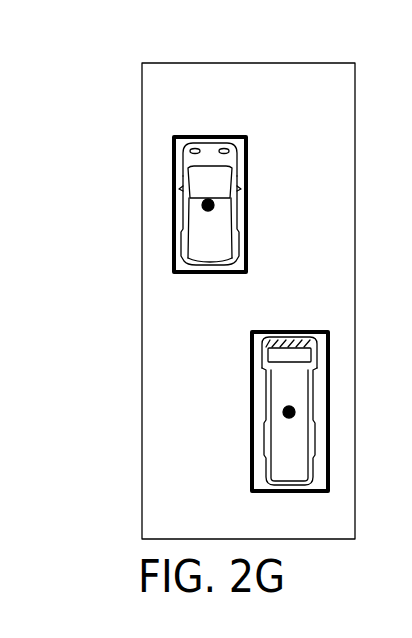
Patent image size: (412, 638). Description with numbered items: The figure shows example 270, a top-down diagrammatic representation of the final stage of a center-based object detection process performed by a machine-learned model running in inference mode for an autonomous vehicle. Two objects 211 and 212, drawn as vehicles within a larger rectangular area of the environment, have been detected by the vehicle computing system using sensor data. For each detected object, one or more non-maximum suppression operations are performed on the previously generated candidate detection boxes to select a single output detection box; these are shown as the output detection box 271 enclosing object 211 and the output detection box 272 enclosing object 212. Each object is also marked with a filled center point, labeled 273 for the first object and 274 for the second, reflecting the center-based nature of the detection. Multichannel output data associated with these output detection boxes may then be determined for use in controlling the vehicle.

The example 270 is at (247, 63).
The object 211 is at (218, 136).
The object 212 is at (293, 331).
The output detection box 271 is at (172, 190).
The output detection box 272 is at (330, 393).
The first vehicle center point 273 is at (214, 204).
The second vehicle center point 274 is at (283, 413).